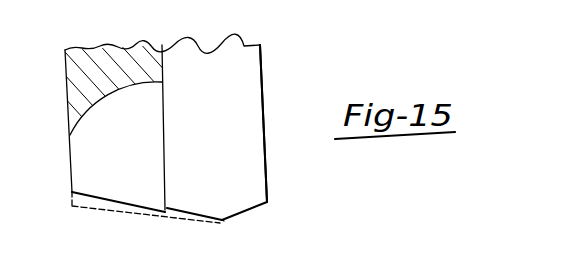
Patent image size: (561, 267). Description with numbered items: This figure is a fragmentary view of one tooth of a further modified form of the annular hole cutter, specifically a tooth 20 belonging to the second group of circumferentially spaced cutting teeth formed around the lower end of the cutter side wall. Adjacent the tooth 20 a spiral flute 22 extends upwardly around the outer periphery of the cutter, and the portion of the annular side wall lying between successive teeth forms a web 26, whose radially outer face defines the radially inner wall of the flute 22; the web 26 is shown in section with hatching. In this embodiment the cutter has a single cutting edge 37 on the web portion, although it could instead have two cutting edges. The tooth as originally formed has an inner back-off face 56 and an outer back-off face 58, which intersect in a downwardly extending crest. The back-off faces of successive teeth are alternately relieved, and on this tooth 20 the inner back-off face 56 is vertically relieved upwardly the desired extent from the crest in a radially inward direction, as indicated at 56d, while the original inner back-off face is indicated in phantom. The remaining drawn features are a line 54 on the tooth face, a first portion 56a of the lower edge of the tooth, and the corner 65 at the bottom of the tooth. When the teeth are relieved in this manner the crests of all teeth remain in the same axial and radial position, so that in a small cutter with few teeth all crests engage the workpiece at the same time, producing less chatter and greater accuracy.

The cutting tooth of the second group 20 is at (273, 131).
The spiral flute 22 is at (255, 60).
The web 26 is at (92, 83).
The cutting edge 37 is at (93, 197).
The dividing line 54 is at (163, 125).
The inner back-off face 56 is at (113, 213).
The first cutting edge portion 56a is at (113, 201).
The relieved inner back-off face 56d is at (205, 212).
The outer back-off face 58 is at (247, 212).
The nose corner 65 is at (222, 222).